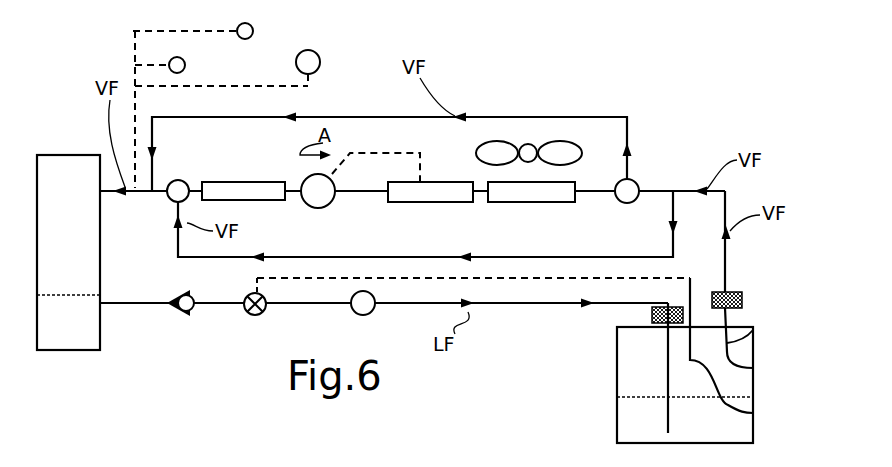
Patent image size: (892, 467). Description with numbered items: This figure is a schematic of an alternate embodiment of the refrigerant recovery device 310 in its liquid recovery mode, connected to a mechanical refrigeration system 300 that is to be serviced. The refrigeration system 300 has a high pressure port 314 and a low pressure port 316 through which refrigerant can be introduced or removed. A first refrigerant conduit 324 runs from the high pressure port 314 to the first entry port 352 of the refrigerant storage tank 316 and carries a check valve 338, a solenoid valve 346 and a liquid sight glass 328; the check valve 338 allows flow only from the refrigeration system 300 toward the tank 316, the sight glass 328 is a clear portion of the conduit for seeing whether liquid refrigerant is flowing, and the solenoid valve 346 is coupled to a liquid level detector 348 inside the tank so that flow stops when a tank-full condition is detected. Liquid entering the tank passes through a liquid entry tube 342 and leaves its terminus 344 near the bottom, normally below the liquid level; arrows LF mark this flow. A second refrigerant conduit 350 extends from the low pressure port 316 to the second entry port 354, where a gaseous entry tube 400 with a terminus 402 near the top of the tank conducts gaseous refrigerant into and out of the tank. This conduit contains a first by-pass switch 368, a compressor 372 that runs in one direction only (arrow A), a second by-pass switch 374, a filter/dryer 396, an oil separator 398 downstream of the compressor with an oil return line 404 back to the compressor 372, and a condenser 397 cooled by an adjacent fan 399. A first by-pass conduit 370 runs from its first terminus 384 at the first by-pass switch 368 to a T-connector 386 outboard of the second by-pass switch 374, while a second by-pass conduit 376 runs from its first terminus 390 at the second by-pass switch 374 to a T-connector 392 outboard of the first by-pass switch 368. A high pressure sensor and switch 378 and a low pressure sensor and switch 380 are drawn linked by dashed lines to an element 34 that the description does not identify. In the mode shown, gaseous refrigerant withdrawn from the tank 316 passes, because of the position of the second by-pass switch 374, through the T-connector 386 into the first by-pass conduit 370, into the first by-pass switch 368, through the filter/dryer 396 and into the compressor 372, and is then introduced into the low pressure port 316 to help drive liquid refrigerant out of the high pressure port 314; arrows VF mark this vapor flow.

The controller 34 is at (309, 50).
The mechanical refrigeration system 300 is at (44, 146).
The refrigerant recovery device 310 is at (464, 94).
The high pressure port 314 is at (107, 298).
The refrigerant storage tank 316 is at (100, 157).
The first refrigerant conduit 324 is at (472, 352).
The liquid sight glass 328 is at (363, 315).
The check valve 338 is at (186, 311).
The liquid entry tube 342 is at (668, 365).
The terminus 344 is at (668, 433).
The solenoid valve 346 is at (255, 315).
The liquid level detector 348 is at (753, 412).
The second refrigerant conduit 350 is at (367, 96).
The first entry port 352 is at (652, 311).
The second entry port 354 is at (750, 314).
The first by-pass switch 368 is at (170, 181).
The first by-pass conduit 370 is at (380, 245).
The compressor 372 is at (318, 209).
The second by-pass switch 374 is at (639, 182).
The second by-pass conduit 376 is at (531, 104).
The high pressure sensor and switch 378 is at (186, 65).
The low pressure sensor and switch 380 is at (240, 25).
The first terminus 384 is at (168, 203).
The T-connector 386 is at (675, 190).
The first terminus 390 is at (627, 178).
The T-connector 392 is at (153, 198).
The filter/dryer 396 is at (247, 181).
The condenser 397 is at (562, 203).
The oil separator 398 is at (455, 203).
The fan 399 is at (561, 140).
The gaseous entry tube 400 is at (753, 335).
The terminus 402 is at (753, 365).
The oil return line 404 is at (375, 152).